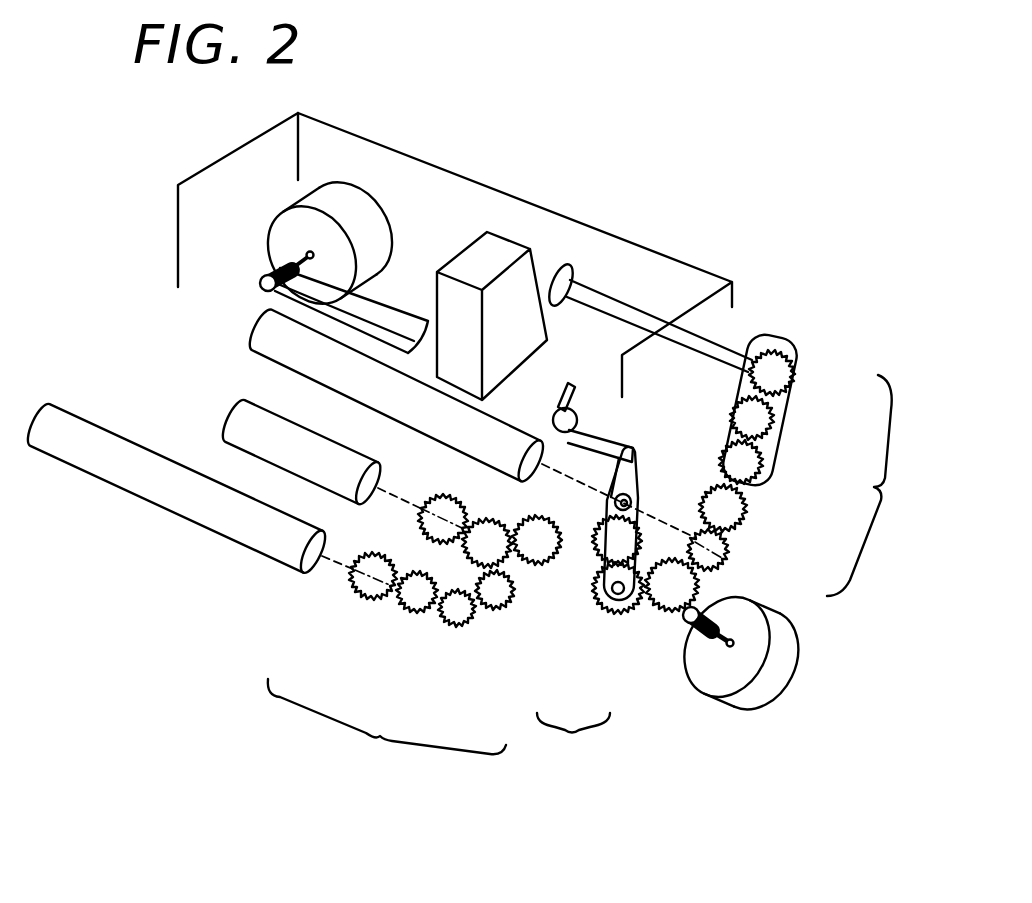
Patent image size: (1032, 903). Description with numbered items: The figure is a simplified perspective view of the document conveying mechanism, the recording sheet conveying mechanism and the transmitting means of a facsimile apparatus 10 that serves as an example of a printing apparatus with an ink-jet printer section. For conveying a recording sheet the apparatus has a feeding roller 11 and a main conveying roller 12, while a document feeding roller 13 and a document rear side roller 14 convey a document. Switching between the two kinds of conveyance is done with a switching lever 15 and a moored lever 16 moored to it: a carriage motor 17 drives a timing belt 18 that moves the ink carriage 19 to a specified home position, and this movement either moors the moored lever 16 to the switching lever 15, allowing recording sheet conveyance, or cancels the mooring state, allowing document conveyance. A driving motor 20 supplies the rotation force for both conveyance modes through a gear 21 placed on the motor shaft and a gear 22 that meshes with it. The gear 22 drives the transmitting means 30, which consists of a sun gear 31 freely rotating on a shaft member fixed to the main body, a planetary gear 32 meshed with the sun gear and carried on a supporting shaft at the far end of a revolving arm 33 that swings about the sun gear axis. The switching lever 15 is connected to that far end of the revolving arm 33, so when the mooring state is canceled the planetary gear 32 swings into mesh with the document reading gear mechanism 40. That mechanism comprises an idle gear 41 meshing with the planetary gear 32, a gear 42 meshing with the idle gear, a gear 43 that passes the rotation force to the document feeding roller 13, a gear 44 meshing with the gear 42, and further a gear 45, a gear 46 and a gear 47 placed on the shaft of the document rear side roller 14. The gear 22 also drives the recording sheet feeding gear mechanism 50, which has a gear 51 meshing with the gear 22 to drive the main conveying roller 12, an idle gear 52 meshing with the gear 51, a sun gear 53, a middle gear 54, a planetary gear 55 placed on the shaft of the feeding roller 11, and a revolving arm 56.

The facsimile apparatus 10 is at (607, 168).
The feeding roller 11 is at (563, 262).
The main conveying roller 12 is at (257, 337).
The document feeding roller 13 is at (233, 432).
The document rear side roller 14 is at (177, 502).
The switching lever 15 is at (638, 457).
The moored lever 16 is at (573, 386).
The carriage motor 17 is at (353, 207).
The timing belt 18 is at (378, 303).
The ink carriage 19 is at (500, 240).
The driving motor 20 is at (777, 680).
The gear 21 is at (690, 628).
The gear 22 is at (668, 603).
The transmitting means 30 is at (573, 742).
The sun gear 31 is at (615, 614).
The planetary gear 32 is at (596, 553).
The revolving arm 33 is at (614, 507).
The document reading gear mechanism 40 is at (387, 731).
The idle gear 41 is at (530, 558).
The gear 42 is at (487, 531).
The gear 43 is at (447, 505).
The gear 44 is at (495, 612).
The gear 45 is at (458, 620).
The gear 46 is at (417, 607).
The gear 47 is at (368, 592).
The recording sheet feeding gear mechanism 50 is at (879, 485).
The gear 51 is at (730, 550).
The idle gear 52 is at (743, 512).
The sun gear 53 is at (753, 462).
The middle gear 54 is at (763, 418).
The planetary gear 55 is at (782, 372).
The revolving arm 56 is at (788, 350).